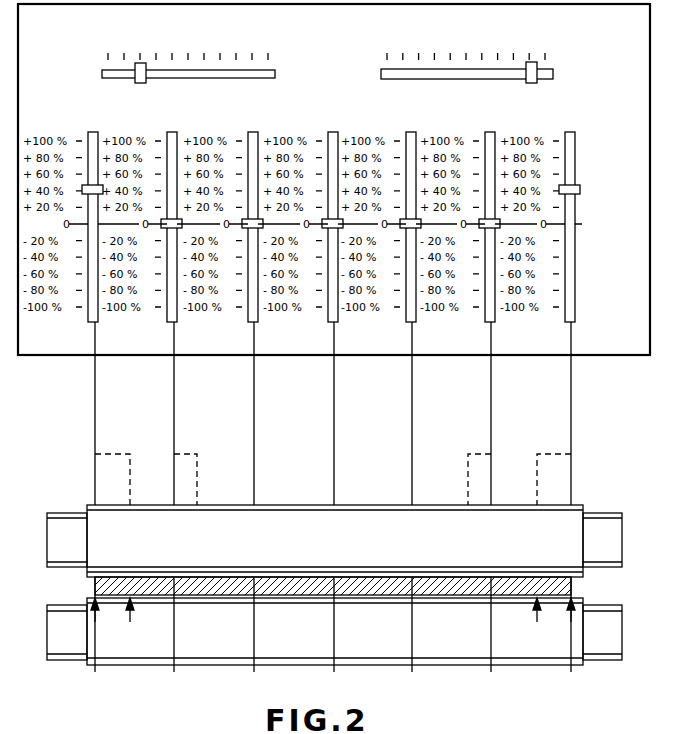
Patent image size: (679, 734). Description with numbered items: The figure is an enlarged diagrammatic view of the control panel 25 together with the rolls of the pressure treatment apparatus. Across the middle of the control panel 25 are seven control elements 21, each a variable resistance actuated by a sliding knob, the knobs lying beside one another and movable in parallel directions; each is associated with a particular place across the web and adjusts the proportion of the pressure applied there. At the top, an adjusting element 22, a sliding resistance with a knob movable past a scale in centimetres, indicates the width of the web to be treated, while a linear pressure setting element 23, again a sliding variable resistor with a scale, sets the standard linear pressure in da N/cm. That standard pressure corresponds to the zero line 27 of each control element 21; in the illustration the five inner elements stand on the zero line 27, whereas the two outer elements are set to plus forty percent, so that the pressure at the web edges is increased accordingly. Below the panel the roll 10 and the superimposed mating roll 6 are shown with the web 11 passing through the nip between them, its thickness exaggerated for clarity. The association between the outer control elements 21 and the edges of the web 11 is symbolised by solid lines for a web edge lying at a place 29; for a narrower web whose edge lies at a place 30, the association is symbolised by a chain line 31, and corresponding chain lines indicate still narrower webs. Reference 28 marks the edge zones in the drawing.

The mating roll 6 is at (598, 500).
The roll 10 is at (596, 597).
The web 11 is at (548, 578).
The control element 21 is at (576, 190).
The adjusting element 22 is at (295, 54).
The linear pressure setting element 23 is at (569, 55).
The control panel 25 is at (650, 281).
The zero line 27 is at (431, 227).
The outer ink zone 28 is at (94, 470).
The place 29 is at (97, 616).
The place 30 is at (132, 616).
The chain line 31 is at (131, 492).